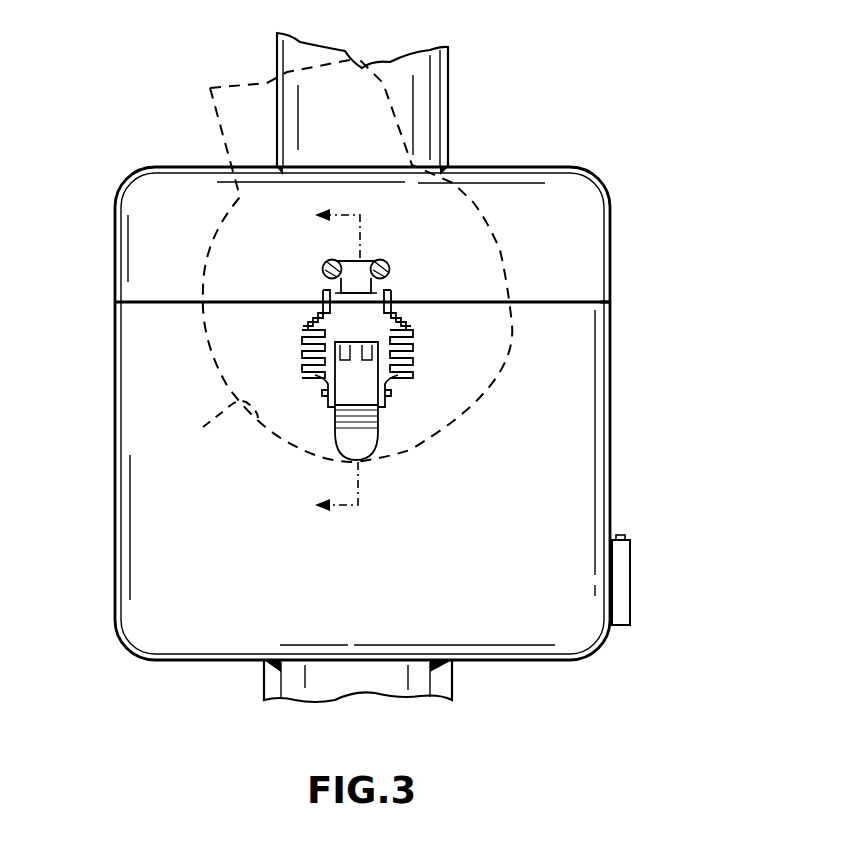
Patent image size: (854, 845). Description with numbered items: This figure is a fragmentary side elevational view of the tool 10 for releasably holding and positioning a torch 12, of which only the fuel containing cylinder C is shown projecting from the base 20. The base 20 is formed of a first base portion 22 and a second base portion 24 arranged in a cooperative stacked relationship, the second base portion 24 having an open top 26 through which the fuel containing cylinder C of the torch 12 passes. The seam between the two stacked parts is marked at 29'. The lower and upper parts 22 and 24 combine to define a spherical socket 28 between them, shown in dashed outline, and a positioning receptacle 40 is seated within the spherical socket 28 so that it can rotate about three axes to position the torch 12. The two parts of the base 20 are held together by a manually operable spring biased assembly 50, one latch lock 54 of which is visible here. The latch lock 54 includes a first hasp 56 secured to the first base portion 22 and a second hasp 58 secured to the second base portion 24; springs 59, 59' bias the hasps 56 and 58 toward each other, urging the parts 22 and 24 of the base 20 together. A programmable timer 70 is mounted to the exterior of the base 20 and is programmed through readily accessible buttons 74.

The tool 10 is at (113, 168).
The torch 12 is at (470, 100).
The base 20 is at (90, 647).
The first base portion 22 is at (578, 638).
The second base portion 24 is at (601, 200).
The open top 26 is at (535, 172).
The spherical socket 28 is at (217, 427).
The seam 29' is at (641, 275).
The positioning receptacle 40 is at (470, 415).
The manually operable spring biased assembly 50 is at (369, 360).
The latch lock 54 is at (428, 382).
The first hasp 56 is at (355, 388).
The second hasp 58 is at (358, 268).
The spring 59 is at (478, 347).
The spring 59' is at (282, 352).
The programmable timer 70 is at (642, 600).
The buttons 74 is at (625, 535).
The fuel containing cylinder C is at (283, 53).